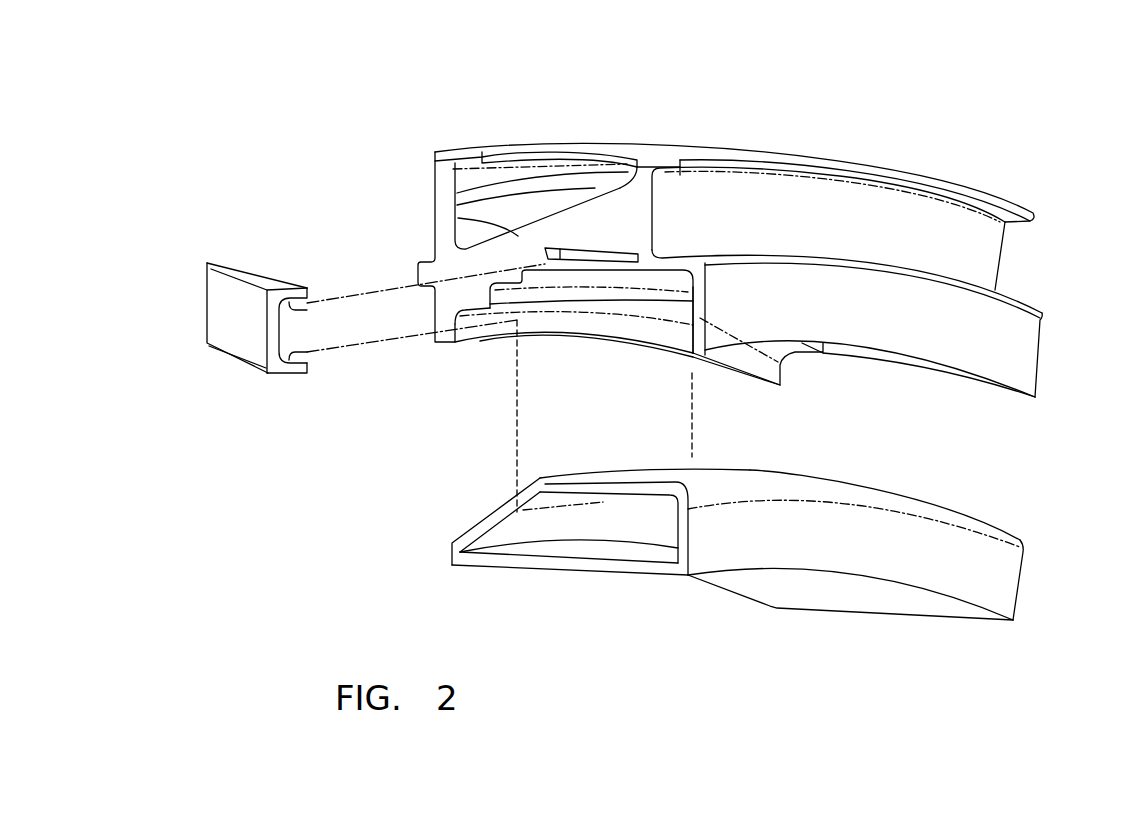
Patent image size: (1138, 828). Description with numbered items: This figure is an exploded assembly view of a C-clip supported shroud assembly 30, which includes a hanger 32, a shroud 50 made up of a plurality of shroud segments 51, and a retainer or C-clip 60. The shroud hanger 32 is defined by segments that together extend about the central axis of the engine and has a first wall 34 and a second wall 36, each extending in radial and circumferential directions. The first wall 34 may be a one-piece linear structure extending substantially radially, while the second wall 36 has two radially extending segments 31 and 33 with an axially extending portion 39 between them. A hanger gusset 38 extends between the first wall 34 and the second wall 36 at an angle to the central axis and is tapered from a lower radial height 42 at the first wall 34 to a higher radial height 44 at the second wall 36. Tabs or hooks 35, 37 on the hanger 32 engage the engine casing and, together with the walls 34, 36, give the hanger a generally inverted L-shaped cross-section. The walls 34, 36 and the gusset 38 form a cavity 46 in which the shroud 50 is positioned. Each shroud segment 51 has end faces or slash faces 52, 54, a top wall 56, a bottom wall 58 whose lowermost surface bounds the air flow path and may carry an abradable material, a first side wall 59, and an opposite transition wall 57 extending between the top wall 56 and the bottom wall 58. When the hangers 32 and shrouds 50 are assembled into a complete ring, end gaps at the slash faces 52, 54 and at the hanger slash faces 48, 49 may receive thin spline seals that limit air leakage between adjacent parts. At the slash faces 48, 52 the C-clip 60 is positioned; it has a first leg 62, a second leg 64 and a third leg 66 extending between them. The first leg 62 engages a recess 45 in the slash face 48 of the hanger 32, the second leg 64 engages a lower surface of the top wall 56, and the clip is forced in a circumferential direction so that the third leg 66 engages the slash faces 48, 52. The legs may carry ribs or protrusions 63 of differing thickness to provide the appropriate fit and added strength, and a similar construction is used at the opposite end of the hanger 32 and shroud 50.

The shroud assembly 30 is at (772, 85).
The radially extending segment 31 is at (970, 353).
The shroud hanger 32 is at (845, 118).
The radially extending segment 33 is at (884, 200).
The first wall 34 is at (430, 177).
The tab or hook 35 is at (470, 148).
The second wall 36 is at (963, 243).
The tab or hook 37 is at (850, 156).
The hanger gusset 38 is at (563, 205).
The axially extending portion 39 is at (702, 262).
The lower radial height 42 is at (457, 218).
The higher radial height 44 is at (607, 192).
The recess 45 is at (622, 256).
The cavity 46 is at (458, 320).
The slash face 48 is at (607, 244).
The slash face 49 is at (998, 272).
The shroud 50 is at (851, 640).
The shroud segment 51 is at (766, 608).
The slash face 52 is at (587, 567).
The slash face 54 is at (1018, 583).
The top wall 56 is at (635, 477).
The transition wall 57 is at (487, 518).
The bottom wall 58 is at (537, 570).
The side wall 59 is at (677, 527).
The C-clip 60 is at (273, 384).
The first leg 62 is at (248, 272).
The lip 63 is at (290, 302).
The second leg 64 is at (293, 373).
The third leg 66 is at (248, 318).